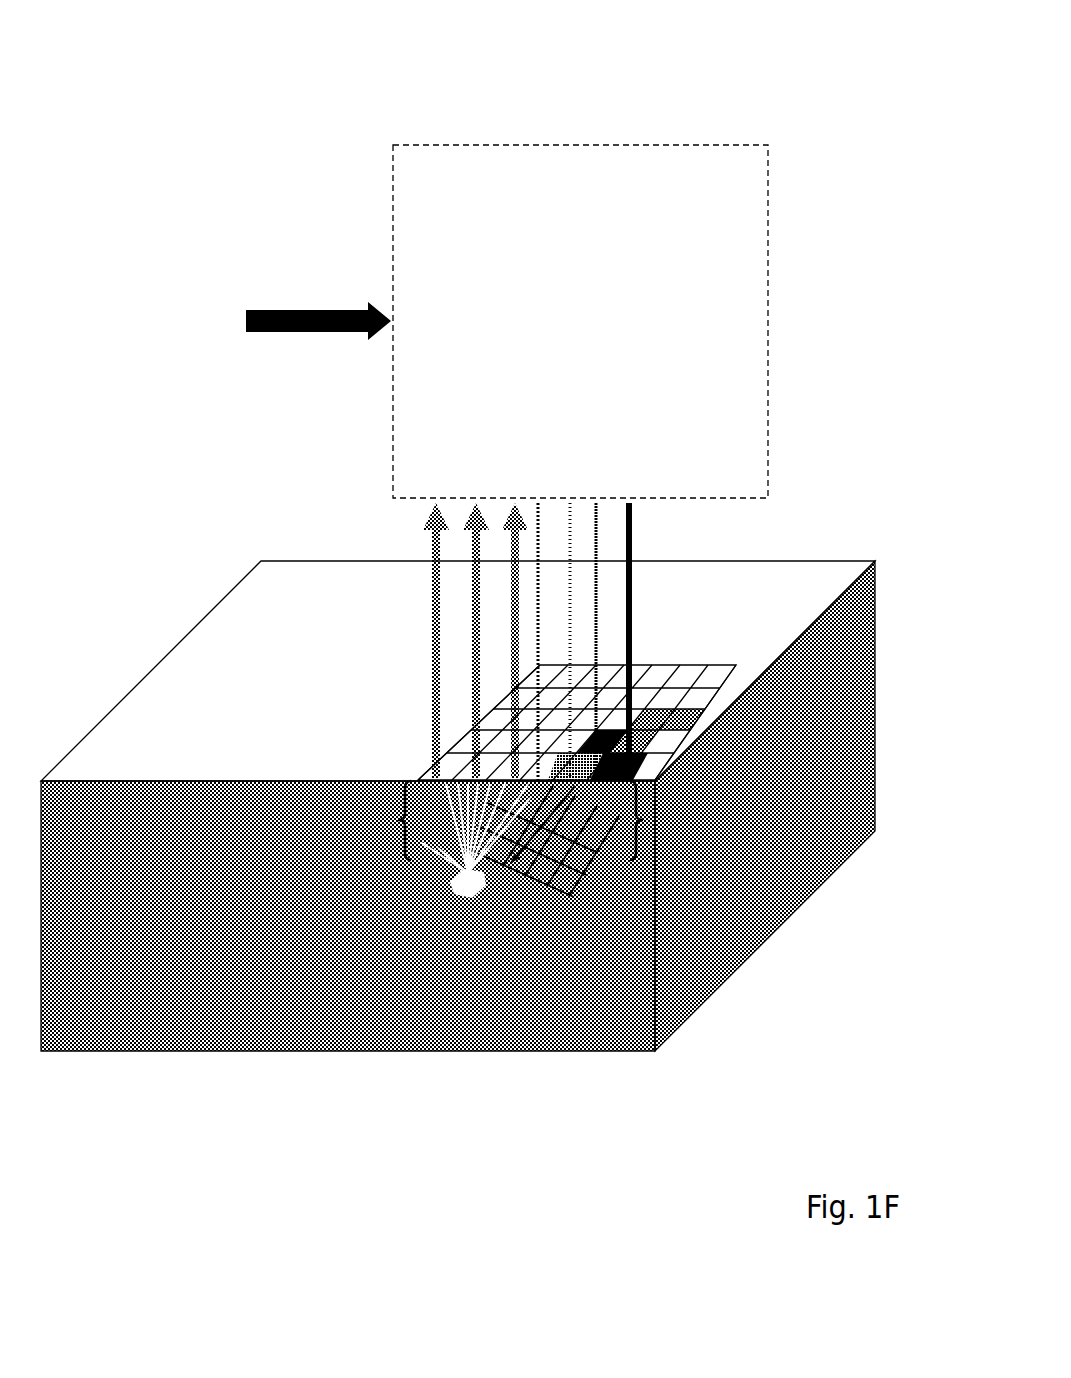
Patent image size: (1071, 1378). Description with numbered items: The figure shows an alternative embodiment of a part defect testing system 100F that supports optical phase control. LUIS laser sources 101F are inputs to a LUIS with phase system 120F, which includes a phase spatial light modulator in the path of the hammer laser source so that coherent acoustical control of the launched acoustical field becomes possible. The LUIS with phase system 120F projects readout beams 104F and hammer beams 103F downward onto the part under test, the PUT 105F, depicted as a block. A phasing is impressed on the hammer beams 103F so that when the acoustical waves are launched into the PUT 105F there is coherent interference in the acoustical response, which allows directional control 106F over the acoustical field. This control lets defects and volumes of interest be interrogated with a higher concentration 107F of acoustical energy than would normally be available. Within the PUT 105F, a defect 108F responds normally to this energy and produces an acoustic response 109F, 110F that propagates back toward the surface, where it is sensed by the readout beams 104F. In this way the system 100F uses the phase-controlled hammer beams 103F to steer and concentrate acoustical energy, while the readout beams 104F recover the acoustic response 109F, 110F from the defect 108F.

The part defect testing system 100F is at (735, 66).
The LUIS laser sources 101F is at (310, 324).
The hammer beams 103F is at (477, 563).
The readout beams 104F is at (578, 623).
The PUT (part under test) 105F is at (768, 806).
The directional control 106F is at (677, 820).
The higher concentration of acoustical energy 107F is at (543, 860).
The defect 108F is at (458, 893).
The acoustic response 109F is at (408, 853).
The acoustic response 110F is at (368, 820).
The LUIS with phase system 120F is at (580, 321).